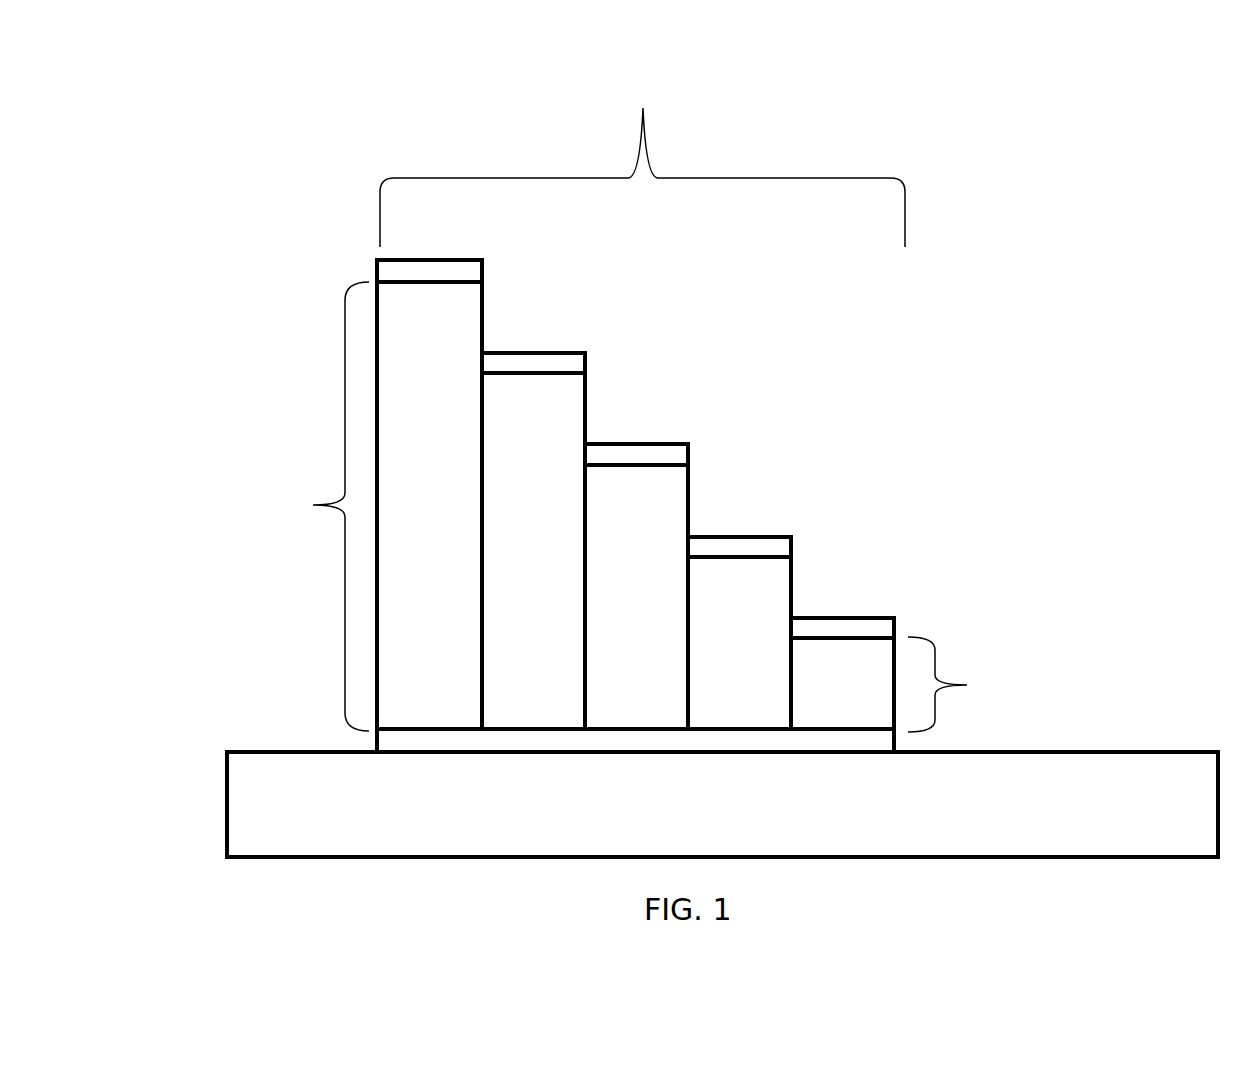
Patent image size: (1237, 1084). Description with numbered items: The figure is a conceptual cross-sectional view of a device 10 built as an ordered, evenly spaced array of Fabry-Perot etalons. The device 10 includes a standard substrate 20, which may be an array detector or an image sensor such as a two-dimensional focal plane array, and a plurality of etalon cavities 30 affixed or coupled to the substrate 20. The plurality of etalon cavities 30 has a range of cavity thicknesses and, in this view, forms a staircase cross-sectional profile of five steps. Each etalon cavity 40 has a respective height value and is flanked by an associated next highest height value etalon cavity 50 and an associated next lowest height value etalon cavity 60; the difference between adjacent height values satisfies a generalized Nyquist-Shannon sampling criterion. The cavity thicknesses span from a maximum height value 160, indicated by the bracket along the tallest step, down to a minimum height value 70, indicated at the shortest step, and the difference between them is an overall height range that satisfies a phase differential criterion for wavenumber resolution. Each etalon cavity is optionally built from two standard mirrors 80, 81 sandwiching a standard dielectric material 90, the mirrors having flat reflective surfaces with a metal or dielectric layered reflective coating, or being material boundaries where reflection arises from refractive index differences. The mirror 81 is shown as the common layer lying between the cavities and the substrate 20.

The device 10 is at (1010, 340).
The substrate 20 is at (1115, 765).
The plurality of etalon cavities 30 is at (643, 103).
The etalon cavity 40 is at (540, 432).
The next highest height value etalon cavity 50 is at (420, 352).
The next lowest height value etalon cavity 60 is at (645, 523).
The minimum height value 70 is at (973, 685).
The mirror 80 is at (757, 547).
The mirror 81 is at (848, 740).
The dielectric material 90 is at (747, 582).
The maximum height value 160 is at (312, 504).